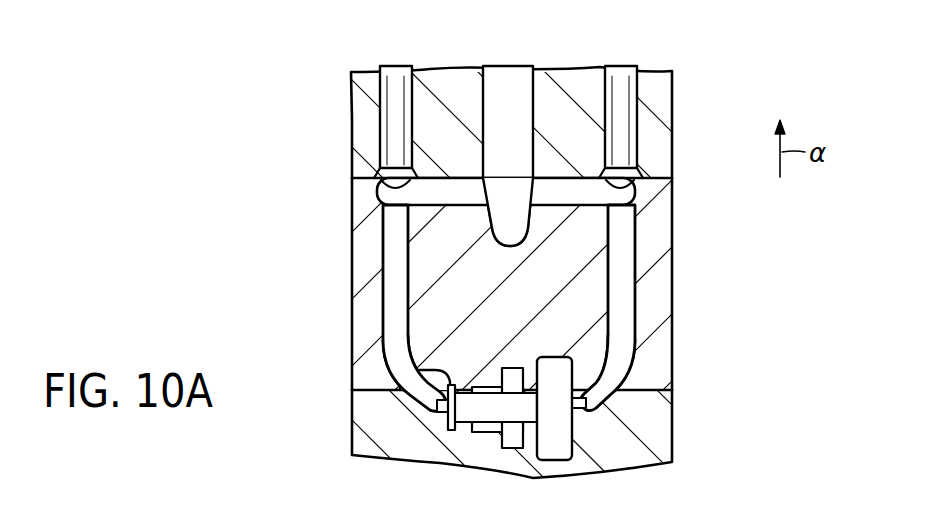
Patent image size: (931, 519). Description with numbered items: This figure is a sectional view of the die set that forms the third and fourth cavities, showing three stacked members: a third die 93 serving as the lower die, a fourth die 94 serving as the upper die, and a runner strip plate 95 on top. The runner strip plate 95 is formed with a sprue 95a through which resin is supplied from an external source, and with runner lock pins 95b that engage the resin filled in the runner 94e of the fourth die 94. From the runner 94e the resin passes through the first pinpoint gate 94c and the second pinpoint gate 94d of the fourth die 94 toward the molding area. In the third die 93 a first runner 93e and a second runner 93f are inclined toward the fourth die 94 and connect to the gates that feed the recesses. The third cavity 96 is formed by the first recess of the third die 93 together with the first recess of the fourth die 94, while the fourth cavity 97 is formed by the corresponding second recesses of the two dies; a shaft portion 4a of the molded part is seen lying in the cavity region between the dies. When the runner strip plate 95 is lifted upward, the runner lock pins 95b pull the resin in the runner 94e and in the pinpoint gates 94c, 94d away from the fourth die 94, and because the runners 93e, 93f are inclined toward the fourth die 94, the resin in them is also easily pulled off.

The runner strip plate 95 is at (660, 97).
The sprue 95a is at (508, 88).
The runner lock pin 95b is at (395, 85).
The fourth die 94 is at (536, 290).
The first pinpoint gate 94c is at (397, 310).
The second pinpoint gate 94d is at (623, 305).
The runner 94e is at (435, 199).
The third die 93 is at (511, 435).
The first runner 93e is at (432, 404).
The second runner 93f is at (670, 441).
The boss portion 4a is at (405, 382).
The third cavity 96 is at (458, 428).
The fourth cavity 97 is at (552, 443).